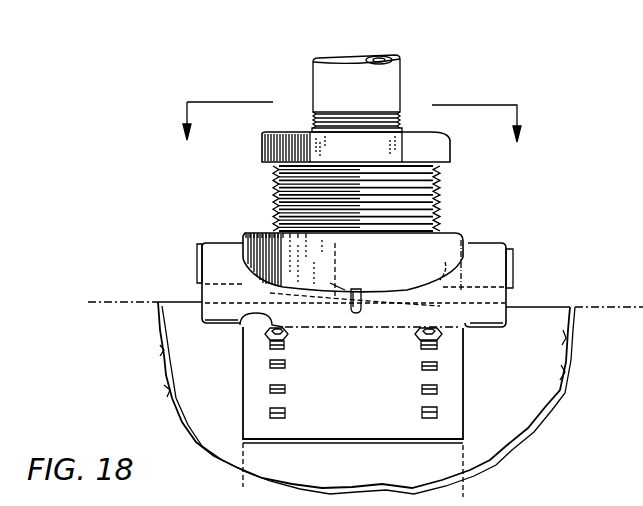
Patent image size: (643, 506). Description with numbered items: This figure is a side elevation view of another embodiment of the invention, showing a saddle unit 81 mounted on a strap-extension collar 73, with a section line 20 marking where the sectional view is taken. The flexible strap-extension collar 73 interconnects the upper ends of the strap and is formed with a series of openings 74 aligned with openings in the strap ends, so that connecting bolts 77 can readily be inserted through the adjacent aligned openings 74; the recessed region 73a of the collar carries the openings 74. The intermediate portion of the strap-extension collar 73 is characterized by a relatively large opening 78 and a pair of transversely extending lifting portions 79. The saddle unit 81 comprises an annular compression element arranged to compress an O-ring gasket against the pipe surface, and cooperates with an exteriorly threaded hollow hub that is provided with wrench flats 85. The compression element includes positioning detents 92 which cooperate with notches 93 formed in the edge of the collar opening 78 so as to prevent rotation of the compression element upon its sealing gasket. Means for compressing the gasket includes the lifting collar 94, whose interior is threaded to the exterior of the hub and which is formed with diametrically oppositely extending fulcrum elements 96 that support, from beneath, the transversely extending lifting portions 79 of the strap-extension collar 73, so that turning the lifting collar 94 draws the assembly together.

The section line 20 is at (352, 123).
The strap-extension collar 73 is at (455, 378).
The recess in mounting plate 73a is at (353, 412).
The openings 74 is at (270, 413).
The connecting bolts 77 is at (242, 336).
The opening 78 is at (262, 232).
The lifting portions 79 is at (214, 242).
The saddle unit 81 is at (268, 175).
The wrench flats 85 is at (428, 148).
The positioning detents 92 is at (358, 293).
The notches 93 is at (332, 280).
The lifting collar 94 is at (455, 258).
The fulcrum elements 96 is at (513, 262).